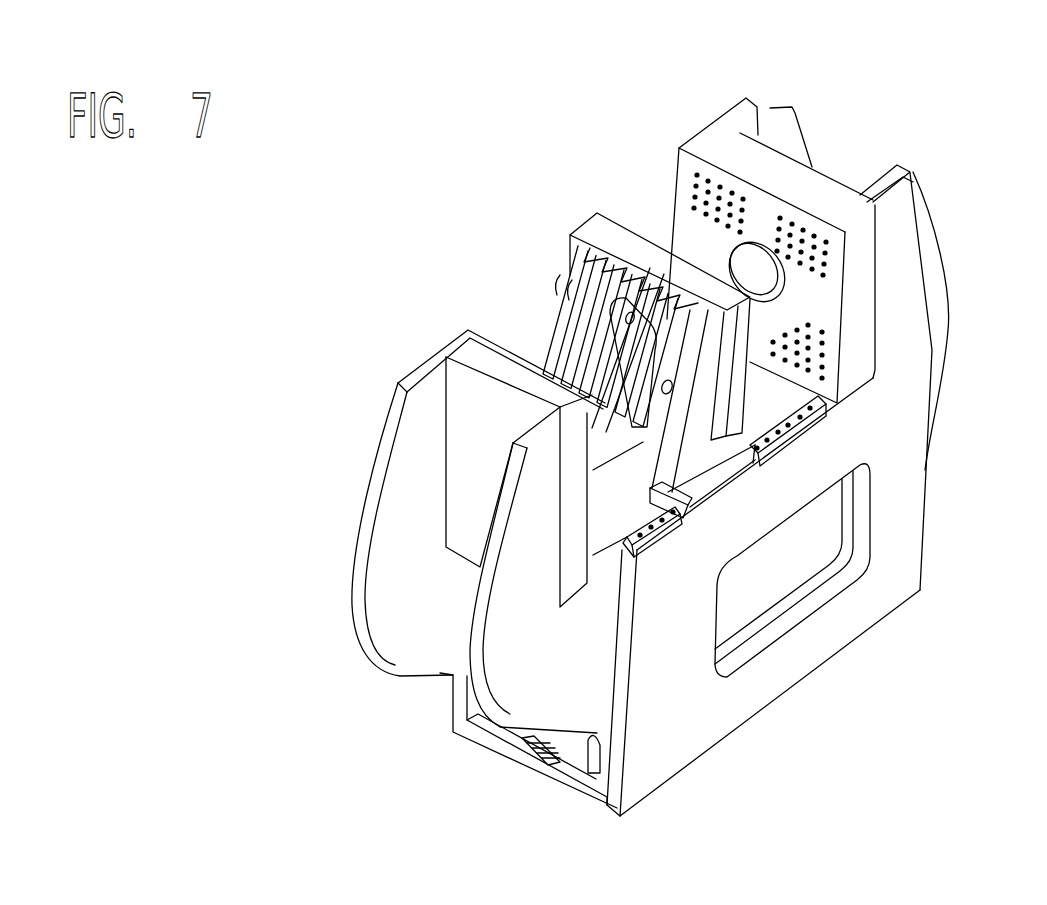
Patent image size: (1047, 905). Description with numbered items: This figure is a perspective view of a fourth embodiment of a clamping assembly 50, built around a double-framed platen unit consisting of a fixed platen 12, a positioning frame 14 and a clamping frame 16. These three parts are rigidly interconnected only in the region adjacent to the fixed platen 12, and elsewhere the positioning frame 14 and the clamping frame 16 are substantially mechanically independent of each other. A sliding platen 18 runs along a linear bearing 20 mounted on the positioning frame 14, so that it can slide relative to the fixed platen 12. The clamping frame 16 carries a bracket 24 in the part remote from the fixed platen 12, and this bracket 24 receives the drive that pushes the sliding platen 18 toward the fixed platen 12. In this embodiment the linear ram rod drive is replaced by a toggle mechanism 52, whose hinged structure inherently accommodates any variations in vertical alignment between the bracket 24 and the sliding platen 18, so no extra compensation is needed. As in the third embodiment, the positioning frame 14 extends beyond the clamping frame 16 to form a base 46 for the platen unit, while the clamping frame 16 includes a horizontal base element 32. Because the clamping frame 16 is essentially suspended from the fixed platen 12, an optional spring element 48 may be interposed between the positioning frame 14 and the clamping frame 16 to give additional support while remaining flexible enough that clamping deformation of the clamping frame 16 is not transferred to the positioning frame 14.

The fixed platen 12 is at (770, 178).
The positioning frame 14 is at (898, 262).
The clamping frame 16 is at (940, 333).
The sliding platen 18 is at (630, 250).
The linear bearing 20 is at (823, 425).
The bracket 24 is at (507, 367).
The horizontal base element 32 is at (573, 790).
The base 46 is at (500, 745).
The spring element 48 is at (537, 753).
The clamping assembly 50 is at (960, 130).
The toggle mechanism 52 is at (543, 337).